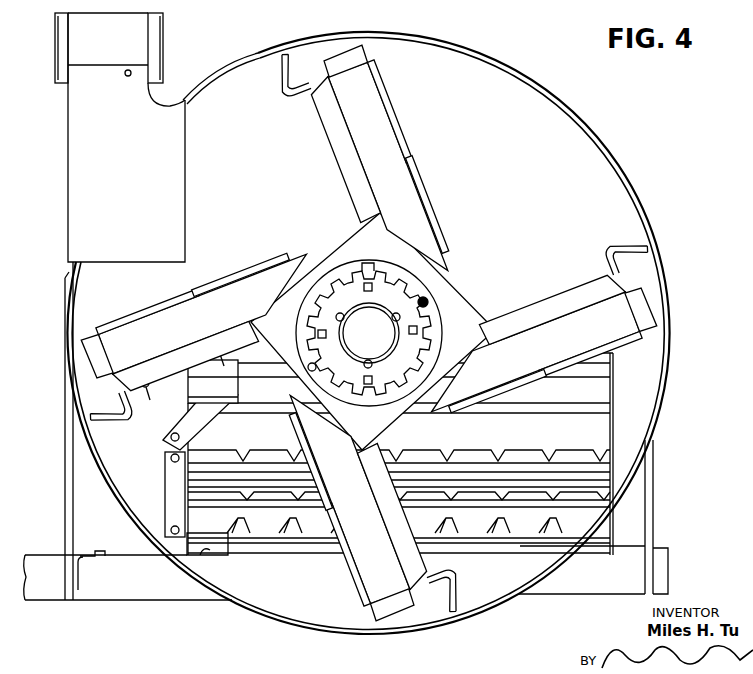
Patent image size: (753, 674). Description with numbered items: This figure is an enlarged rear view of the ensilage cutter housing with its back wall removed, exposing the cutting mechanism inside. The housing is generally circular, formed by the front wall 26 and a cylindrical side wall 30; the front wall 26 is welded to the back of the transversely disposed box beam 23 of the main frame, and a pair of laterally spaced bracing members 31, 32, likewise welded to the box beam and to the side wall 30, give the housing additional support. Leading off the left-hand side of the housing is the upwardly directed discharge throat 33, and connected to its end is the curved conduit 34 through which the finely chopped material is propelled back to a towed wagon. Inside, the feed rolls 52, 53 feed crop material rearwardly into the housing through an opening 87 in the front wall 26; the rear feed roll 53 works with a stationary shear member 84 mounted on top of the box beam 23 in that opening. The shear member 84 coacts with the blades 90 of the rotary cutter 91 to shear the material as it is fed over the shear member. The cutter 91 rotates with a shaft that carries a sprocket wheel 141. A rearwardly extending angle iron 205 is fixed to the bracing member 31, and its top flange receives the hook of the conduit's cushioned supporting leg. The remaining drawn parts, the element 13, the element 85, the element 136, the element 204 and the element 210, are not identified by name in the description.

The housing 13 is at (641, 191).
The box beam 23 is at (143, 590).
The front wall 26 is at (483, 147).
The cylindrical side wall 30 is at (502, 60).
The bracing member 31 is at (70, 490).
The bracing member 32 is at (651, 505).
The discharge throat 33 is at (82, 97).
The curved conduit 34 is at (177, 29).
The feed roll 52 is at (594, 393).
The rear feed roll 53 is at (523, 446).
The stationary shear member 84 is at (312, 548).
The grate lug 85 is at (394, 519).
The opening 87 is at (613, 363).
The blades 90 is at (358, 55).
The rotary cutter 91 is at (453, 221).
The hub shaft 136 is at (354, 343).
The sprocket wheel 141 is at (366, 392).
The mounting bracket 204 is at (90, 556).
The angle iron 205 is at (80, 576).
The aperture 210 is at (128, 77).